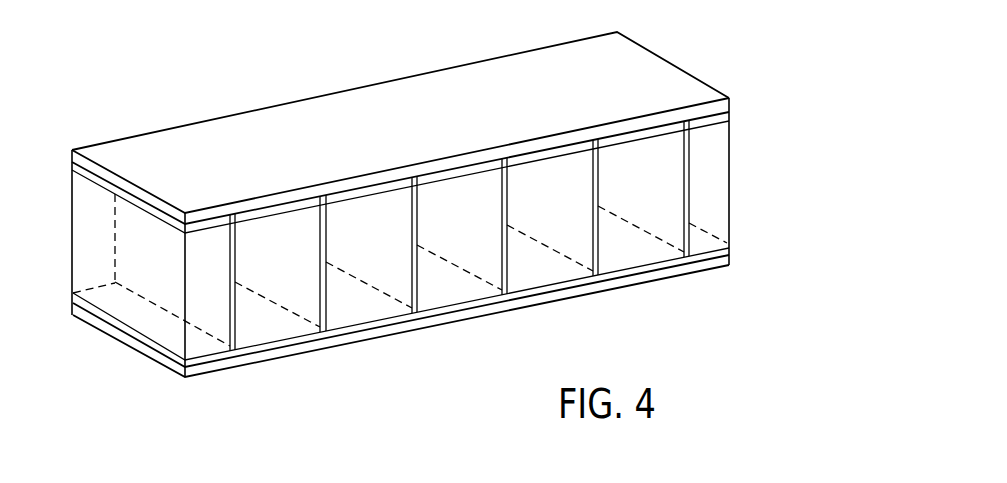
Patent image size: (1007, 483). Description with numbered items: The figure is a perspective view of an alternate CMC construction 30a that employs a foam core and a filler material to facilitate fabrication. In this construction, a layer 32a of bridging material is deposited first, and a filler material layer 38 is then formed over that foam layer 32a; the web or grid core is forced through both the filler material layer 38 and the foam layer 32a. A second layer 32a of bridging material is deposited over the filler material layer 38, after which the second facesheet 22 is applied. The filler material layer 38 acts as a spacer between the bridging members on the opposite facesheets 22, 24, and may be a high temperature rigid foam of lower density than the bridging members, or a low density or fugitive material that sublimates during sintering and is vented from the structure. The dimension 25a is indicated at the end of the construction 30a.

The CMC construction 30a is at (97, 91).
The second facesheet 22 is at (215, 143).
The facesheet 24 is at (182, 365).
The filler material layer 38 is at (208, 280).
The layer of bridging material 32a is at (641, 135).
The height of compartments 25a is at (742, 122).